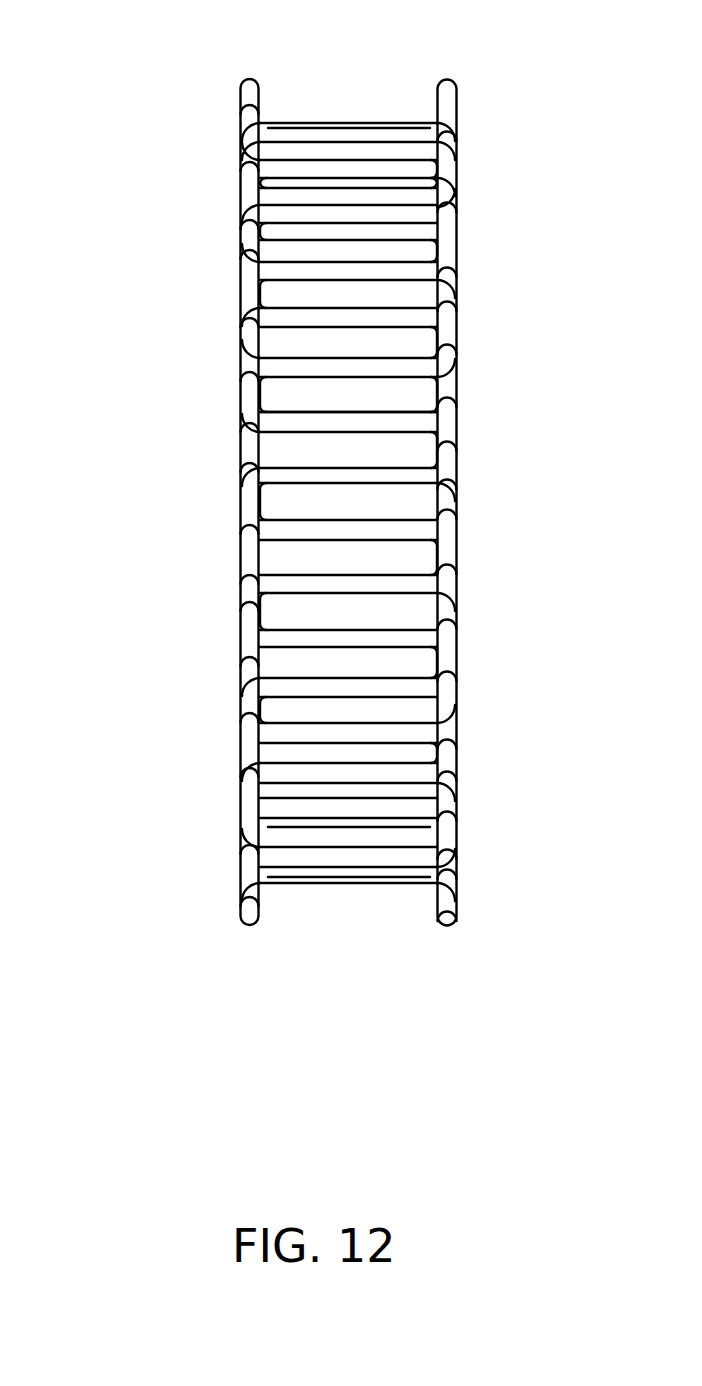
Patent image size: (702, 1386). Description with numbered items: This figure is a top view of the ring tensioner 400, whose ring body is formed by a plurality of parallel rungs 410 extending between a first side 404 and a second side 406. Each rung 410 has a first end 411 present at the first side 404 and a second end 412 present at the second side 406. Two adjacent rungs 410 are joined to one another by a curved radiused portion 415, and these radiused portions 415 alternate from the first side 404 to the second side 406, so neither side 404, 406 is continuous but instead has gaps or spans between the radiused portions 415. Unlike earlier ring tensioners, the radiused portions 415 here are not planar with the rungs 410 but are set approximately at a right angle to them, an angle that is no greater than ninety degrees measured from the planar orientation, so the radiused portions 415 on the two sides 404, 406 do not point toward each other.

The ring tensioner 400 is at (150, 216).
The first side 404 is at (239, 150).
The second side 406 is at (458, 170).
The rung 410 is at (325, 122).
The first end 411 is at (260, 432).
The second end 412 is at (437, 408).
The radiused portion 415 is at (240, 82).